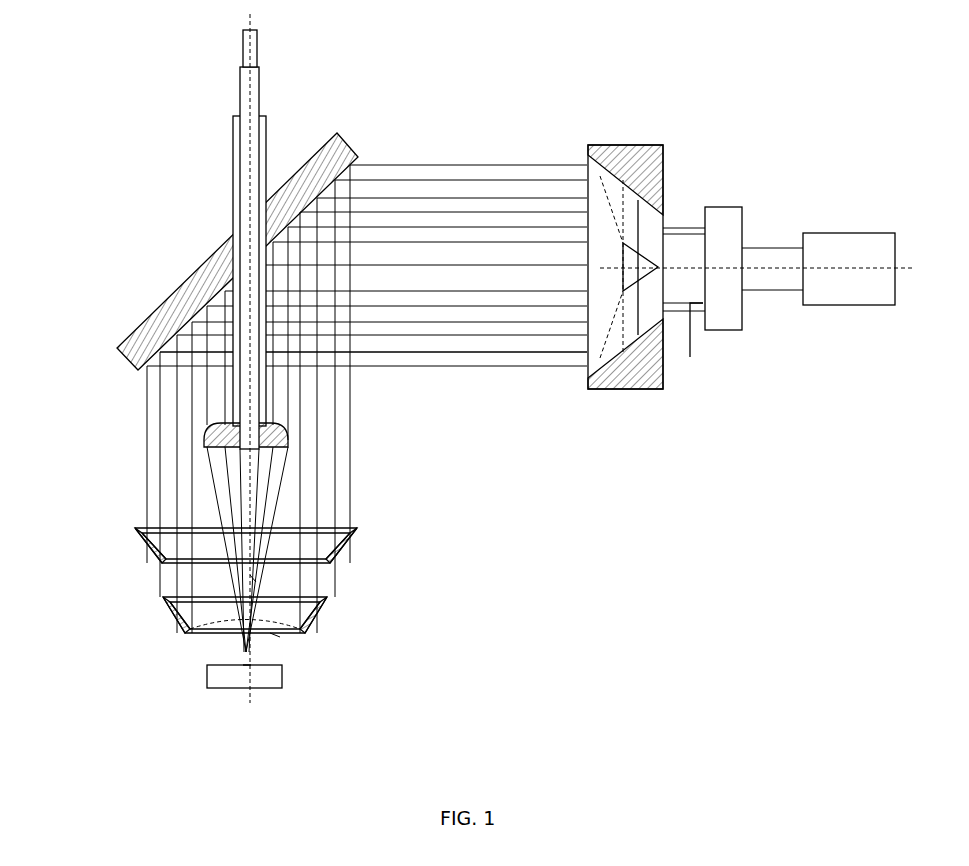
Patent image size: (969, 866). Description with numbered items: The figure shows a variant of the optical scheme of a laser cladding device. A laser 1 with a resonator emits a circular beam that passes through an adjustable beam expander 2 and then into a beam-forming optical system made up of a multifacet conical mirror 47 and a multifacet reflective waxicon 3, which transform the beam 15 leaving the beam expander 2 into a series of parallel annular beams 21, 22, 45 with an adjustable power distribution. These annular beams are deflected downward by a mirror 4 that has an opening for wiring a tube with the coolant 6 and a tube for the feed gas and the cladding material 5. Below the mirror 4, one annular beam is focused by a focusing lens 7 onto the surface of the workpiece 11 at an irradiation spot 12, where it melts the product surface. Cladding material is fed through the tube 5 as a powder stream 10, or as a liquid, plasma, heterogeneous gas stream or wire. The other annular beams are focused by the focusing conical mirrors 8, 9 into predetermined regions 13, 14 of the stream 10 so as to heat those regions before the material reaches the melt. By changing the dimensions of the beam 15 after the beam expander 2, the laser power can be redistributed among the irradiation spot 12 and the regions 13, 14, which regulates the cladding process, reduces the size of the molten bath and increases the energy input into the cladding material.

The laser 1 is at (843, 230).
The adjustable beam expander 2 is at (732, 222).
The multifacet reflective waxicon 3 is at (635, 148).
The mirror 4 is at (340, 145).
The tube for the feed gas and cladding material 5 is at (253, 82).
The tube with the coolant 6 is at (238, 153).
The focusing lens 7 is at (280, 437).
The focusing conical mirror 8 is at (350, 547).
The focusing conical mirror 9 is at (322, 610).
The cladding material stream 10 is at (275, 635).
The workpiece 11 is at (268, 682).
The irradiation spot 12 is at (247, 663).
The region of the cladding material stream 13 is at (243, 640).
The region of the cladding material stream 14 is at (255, 579).
The beam after the beam expander 15 is at (670, 312).
The annular beam 21 is at (480, 358).
The annular beam 22 is at (450, 327).
The annular beam 45 is at (552, 232).
The multifacet conical mirror 47 is at (638, 268).